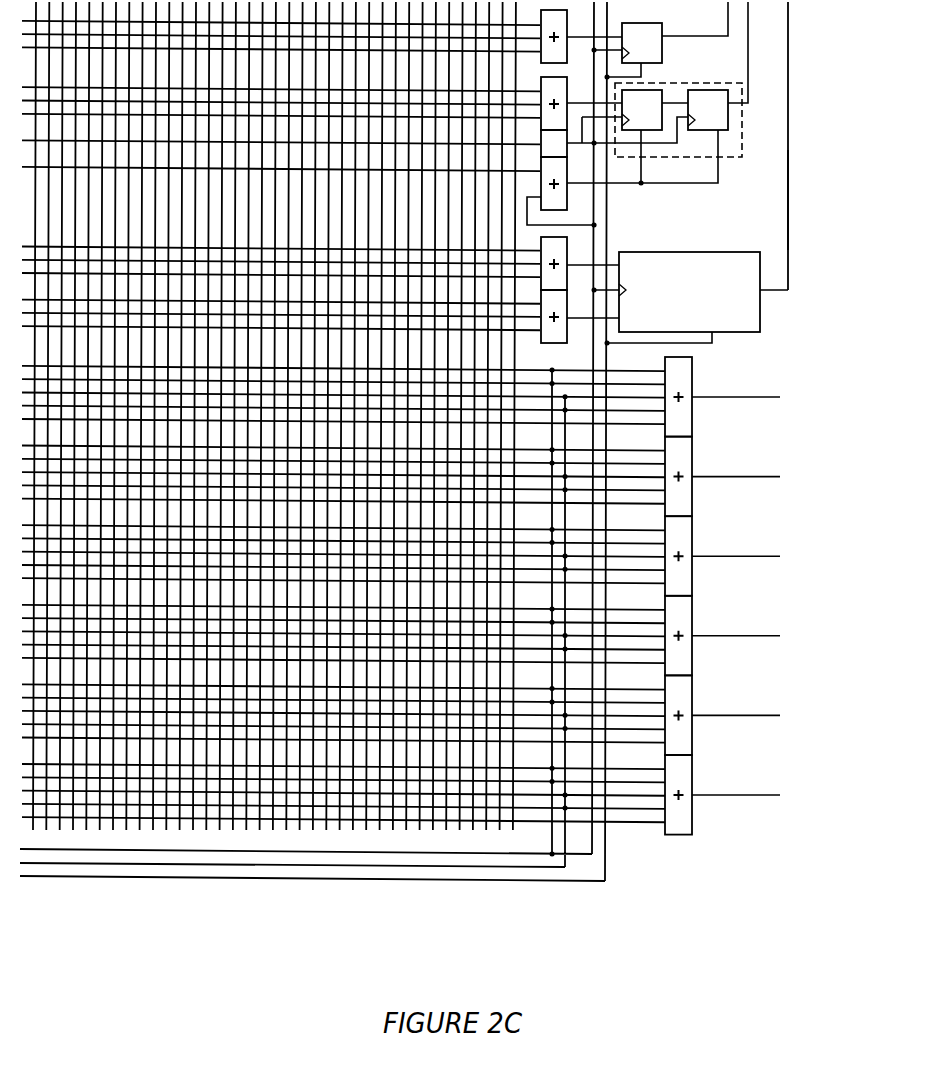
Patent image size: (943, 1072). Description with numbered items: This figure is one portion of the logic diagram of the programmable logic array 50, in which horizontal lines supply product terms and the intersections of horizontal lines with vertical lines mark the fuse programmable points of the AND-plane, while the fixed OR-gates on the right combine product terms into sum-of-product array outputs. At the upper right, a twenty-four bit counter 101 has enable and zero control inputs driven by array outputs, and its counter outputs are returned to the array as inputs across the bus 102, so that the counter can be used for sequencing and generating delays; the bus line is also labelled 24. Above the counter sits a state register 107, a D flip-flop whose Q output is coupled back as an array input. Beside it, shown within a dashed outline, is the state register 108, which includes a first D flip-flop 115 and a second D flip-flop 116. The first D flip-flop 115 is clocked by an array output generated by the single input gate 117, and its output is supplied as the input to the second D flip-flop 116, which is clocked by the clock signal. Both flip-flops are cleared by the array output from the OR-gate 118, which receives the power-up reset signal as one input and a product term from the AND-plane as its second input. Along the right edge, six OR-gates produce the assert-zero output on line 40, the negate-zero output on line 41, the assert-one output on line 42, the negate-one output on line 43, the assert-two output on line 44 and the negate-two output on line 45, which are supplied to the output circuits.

The bus line 24 is at (780, 167).
The line 40 is at (745, 395).
The line 41 is at (745, 475).
The line 42 is at (745, 554).
The line 43 is at (745, 634).
The line 44 is at (745, 713).
The line 45 is at (745, 793).
The programmable logic array 50 is at (350, 901).
The 24-bit counter 101 is at (765, 318).
The bus 102 is at (788, 118).
The state register 107 is at (667, 57).
The state register 108 is at (724, 127).
The first D flip-flop 115 is at (655, 133).
The second D flip-flop 116 is at (730, 122).
The single input gate 117 is at (569, 147).
The OR-gate 118 is at (569, 197).